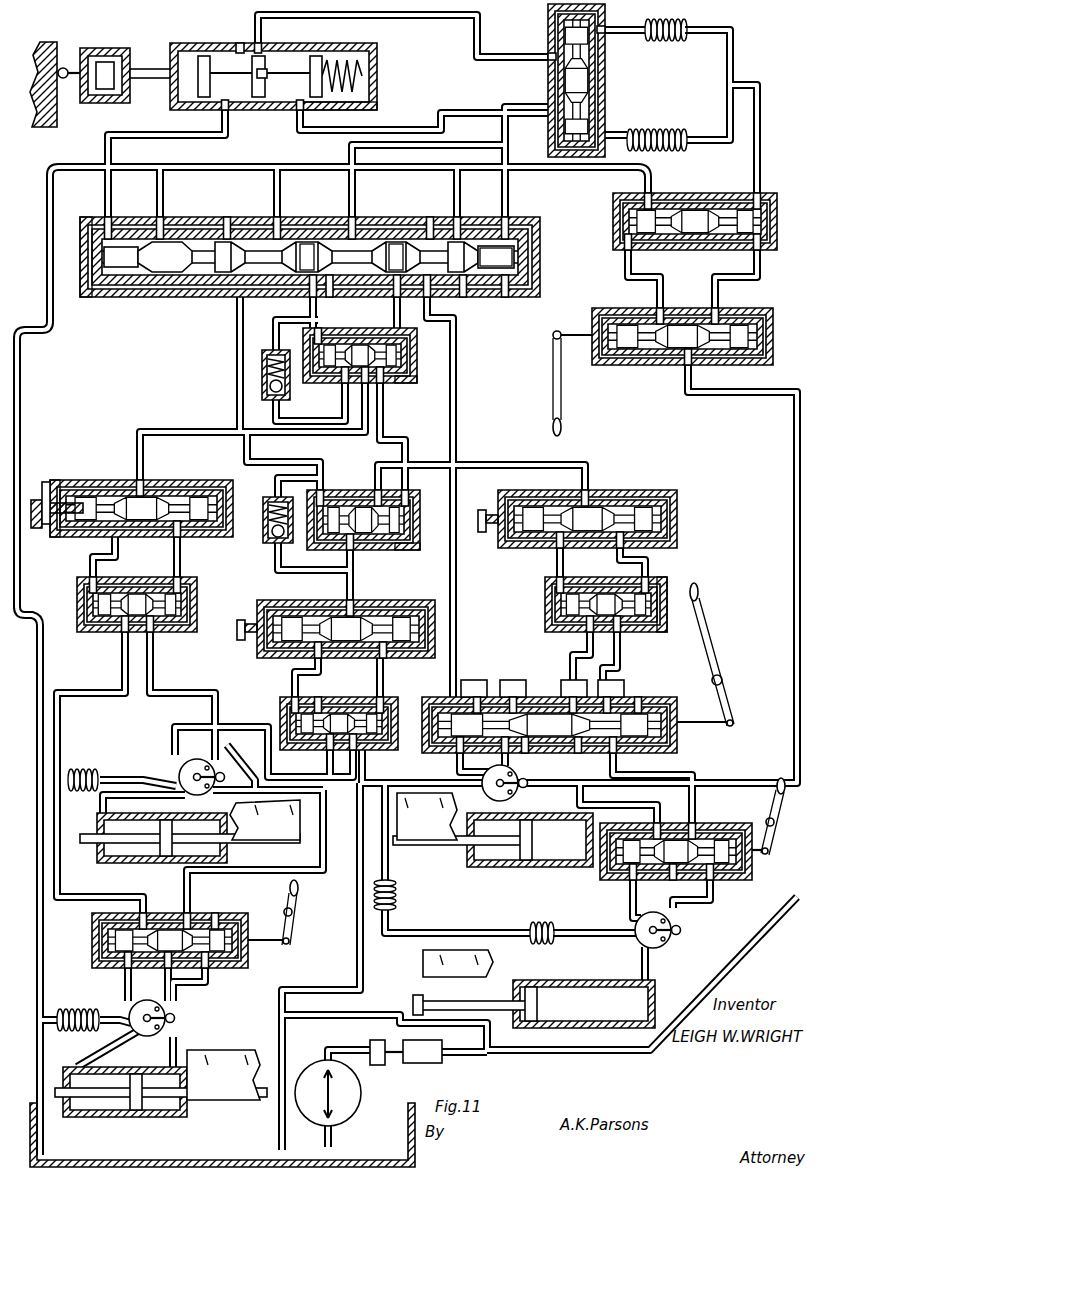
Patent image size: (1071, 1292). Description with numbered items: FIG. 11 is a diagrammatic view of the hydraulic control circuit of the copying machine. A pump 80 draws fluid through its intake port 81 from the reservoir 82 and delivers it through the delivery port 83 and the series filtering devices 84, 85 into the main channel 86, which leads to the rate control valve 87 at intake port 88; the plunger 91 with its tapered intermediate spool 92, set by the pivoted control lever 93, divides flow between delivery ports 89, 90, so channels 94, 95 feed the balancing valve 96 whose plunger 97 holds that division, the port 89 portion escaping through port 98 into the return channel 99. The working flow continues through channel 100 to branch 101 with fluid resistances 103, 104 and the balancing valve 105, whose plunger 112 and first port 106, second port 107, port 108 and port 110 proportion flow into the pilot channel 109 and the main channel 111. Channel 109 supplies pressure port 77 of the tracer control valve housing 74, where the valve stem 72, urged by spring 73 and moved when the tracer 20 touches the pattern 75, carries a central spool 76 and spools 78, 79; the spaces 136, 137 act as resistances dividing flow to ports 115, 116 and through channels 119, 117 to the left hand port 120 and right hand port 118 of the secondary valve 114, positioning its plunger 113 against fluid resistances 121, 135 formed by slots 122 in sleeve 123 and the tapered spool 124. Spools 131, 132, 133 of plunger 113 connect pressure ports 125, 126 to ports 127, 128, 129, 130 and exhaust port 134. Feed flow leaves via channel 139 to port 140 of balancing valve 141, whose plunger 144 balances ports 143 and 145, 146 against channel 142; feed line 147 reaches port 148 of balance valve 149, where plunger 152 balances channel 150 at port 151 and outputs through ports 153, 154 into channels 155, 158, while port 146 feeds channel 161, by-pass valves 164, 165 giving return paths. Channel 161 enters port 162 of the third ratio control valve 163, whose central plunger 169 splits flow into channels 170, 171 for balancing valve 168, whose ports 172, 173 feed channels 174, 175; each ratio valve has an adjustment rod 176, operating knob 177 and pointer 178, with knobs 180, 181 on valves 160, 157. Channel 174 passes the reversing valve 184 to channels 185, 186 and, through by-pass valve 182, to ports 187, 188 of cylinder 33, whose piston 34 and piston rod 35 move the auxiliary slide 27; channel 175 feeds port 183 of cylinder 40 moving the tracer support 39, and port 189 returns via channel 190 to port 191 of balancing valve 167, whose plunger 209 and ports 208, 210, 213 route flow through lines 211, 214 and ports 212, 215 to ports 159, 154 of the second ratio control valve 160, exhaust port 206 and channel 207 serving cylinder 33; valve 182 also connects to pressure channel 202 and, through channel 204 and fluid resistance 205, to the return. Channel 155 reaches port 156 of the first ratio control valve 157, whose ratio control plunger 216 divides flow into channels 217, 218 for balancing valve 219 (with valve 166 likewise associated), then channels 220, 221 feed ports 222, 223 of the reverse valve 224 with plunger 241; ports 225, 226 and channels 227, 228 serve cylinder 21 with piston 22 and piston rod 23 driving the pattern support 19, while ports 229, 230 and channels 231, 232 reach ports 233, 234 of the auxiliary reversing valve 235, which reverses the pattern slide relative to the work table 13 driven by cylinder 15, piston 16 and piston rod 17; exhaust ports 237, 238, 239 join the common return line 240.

The work table 13 is at (426, 962).
The cylinder 15 is at (604, 1028).
The piston 16 is at (543, 1028).
The piston rod 17 is at (504, 1022).
The pattern support 19 is at (427, 816).
The tracer 20 is at (62, 68).
The cylinder 21 is at (500, 865).
The piston 22 is at (544, 866).
The piston rod 23 is at (422, 844).
The auxiliary slide 27 is at (234, 1056).
The cylinder 33 is at (141, 1116).
The piston 34 is at (132, 1114).
The piston rod 35 is at (211, 1108).
The tracer support 39 is at (292, 802).
The cylinder 40 is at (123, 862).
The valve stem 72 is at (148, 66).
The spring 73 is at (364, 72).
The valve housing 74 is at (356, 110).
The pattern 75 is at (54, 45).
The central spool 76 is at (260, 80).
The pressure port 77 is at (258, 32).
The spool 78 is at (200, 56).
The spool 79 is at (317, 58).
The pump 80 is at (360, 1094).
The intake port 81 is at (330, 1140).
The reservoir 82 is at (408, 1134).
The delivery port 83 is at (357, 1045).
The filtering device 84 is at (379, 1066).
The filtering device 85 is at (442, 1062).
The main channel 86 is at (742, 958).
The rate control valve 87 is at (604, 313).
The intake port 88 is at (683, 374).
The delivery port 89 is at (655, 311).
The delivery port 90 is at (720, 311).
The plunger 91 is at (576, 354).
The intermediate spool 92 is at (684, 329).
The control lever 93 is at (560, 398).
The channel 94 is at (632, 268).
The channel 95 is at (759, 264).
The balancing valve 96 is at (613, 212).
The plunger 97 is at (684, 216).
The port 98 is at (649, 194).
The return channel 99 is at (394, 169).
The channel 100 is at (755, 164).
The branch 101 is at (696, 33).
The fluid resistance 103 is at (656, 48).
The fluid resistance 104 is at (656, 131).
The balancing valve 105 is at (546, 37).
The first port 106 is at (606, 30).
The second port 107 is at (608, 138).
The port 108 is at (546, 56).
The channel 109 is at (418, 26).
The port 110 is at (546, 110).
The channel 111 is at (474, 112).
The plunger 112 is at (592, 76).
The plunger 113 is at (356, 251).
The secondary valve 114 is at (496, 298).
The port 115 is at (222, 110).
The port 116 is at (300, 110).
The channel 117 is at (310, 134).
The right hand port 118 is at (509, 218).
The channel 119 is at (149, 132).
The left hand port 120 is at (90, 226).
The fluid resistance 121 is at (458, 217).
The slot 122 is at (440, 206).
The sleeve 123 is at (482, 234).
The tapered spool 124 is at (454, 300).
The pressure port 125 is at (164, 220).
The pressure port 126 is at (354, 218).
The port 127 is at (237, 304).
The port 128 is at (316, 293).
The feed port 129 is at (368, 290).
The port 130 is at (424, 300).
The spool 131 is at (316, 246).
The spool 132 is at (406, 244).
The spool 133 is at (225, 217).
The exhaust port 134 is at (278, 222).
The fluid resistance 135 is at (144, 230).
The space 136 is at (252, 56).
The space 137 is at (264, 58).
The channel 139 is at (396, 316).
The port 140 is at (410, 351).
The balancing valve 141 is at (408, 382).
The channel 142 is at (317, 316).
The port 143 is at (308, 324).
The plunger 144 is at (368, 384).
The port 145 is at (384, 386).
The port 146 is at (346, 386).
The feed line 147 is at (404, 450).
The port 148 is at (406, 490).
The balance valve 149 is at (394, 550).
The channel 150 is at (262, 380).
The port 151 is at (320, 474).
The plunger 152 is at (362, 524).
The port 153 is at (324, 490).
The port 154 is at (344, 554).
The channel 155 is at (506, 466).
The port 156 is at (590, 494).
The first ratio control valve 157 is at (641, 512).
The channel 158 is at (348, 587).
The port 159 is at (358, 600).
The second ratio control valve 160 is at (412, 657).
The channel 161 is at (213, 418).
The port 162 is at (138, 480).
The third ratio control valve 163 is at (76, 480).
The by-pass valve 164 is at (270, 407).
The by-pass valve 165 is at (264, 546).
The balancing valve 166 is at (657, 633).
The balancing valve 167 is at (377, 750).
The balancing valve 168 is at (88, 641).
The central plunger 169 is at (144, 513).
The channel 170 is at (112, 544).
The channel 171 is at (178, 560).
The port 172 is at (122, 626).
The port 173 is at (150, 626).
The channel 174 is at (98, 696).
The channel 175 is at (153, 688).
The adjustment rod 176 is at (60, 537).
The operating knob 177 is at (38, 528).
The pointer 178 is at (44, 482).
The adjusting knob 180 is at (236, 636).
The adjusting knob 181 is at (482, 532).
The by-pass valve 182 is at (176, 766).
The port 183 is at (236, 802).
The reversing valve 184 is at (237, 915).
The channel 185 is at (122, 981).
The channel 186 is at (172, 1001).
The port 187 is at (76, 1066).
The port 188 is at (172, 1062).
The port 189 is at (102, 808).
The channel 190 is at (255, 726).
The port 191 is at (362, 758).
The pressure channel 202 is at (244, 766).
The channel 204 is at (146, 774).
The fluid resistance 205 is at (86, 768).
The exhaust port 206 is at (186, 913).
The channel 207 is at (308, 877).
The port 208 is at (322, 756).
The plunger 209 is at (341, 720).
The port 210 is at (292, 702).
The line 211 is at (316, 698).
The port 212 is at (302, 664).
The port 213 is at (382, 700).
The line 214 is at (378, 672).
The port 215 is at (381, 658).
The ratio control plunger 216 is at (652, 493).
The channel 217 is at (557, 560).
The channel 218 is at (652, 566).
The balancing valve 219 is at (544, 604).
The channel 220 is at (538, 609).
The channel 221 is at (619, 654).
The port 222 is at (475, 696).
The port 223 is at (613, 696).
The reverse valve 224 is at (676, 744).
The port 225 is at (458, 752).
The port 226 is at (509, 752).
The channel 227 is at (474, 768).
The channel 228 is at (525, 754).
The port 229 is at (579, 752).
The port 230 is at (609, 774).
The channel 231 is at (648, 808).
The channel 232 is at (695, 794).
The port 233 is at (659, 823).
The port 234 is at (698, 823).
The auxiliary reversing valve 235 is at (731, 883).
The exhaust port 237 is at (515, 696).
The exhaust port 238 is at (576, 696).
The exhaust port 239 is at (637, 698).
The return line 240 is at (456, 586).
The plunger 241 is at (704, 722).